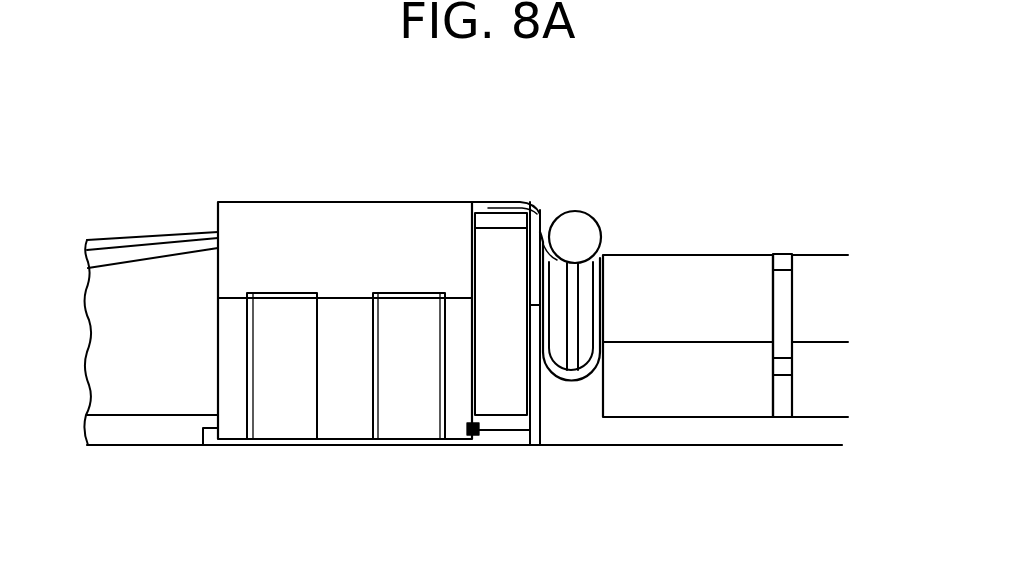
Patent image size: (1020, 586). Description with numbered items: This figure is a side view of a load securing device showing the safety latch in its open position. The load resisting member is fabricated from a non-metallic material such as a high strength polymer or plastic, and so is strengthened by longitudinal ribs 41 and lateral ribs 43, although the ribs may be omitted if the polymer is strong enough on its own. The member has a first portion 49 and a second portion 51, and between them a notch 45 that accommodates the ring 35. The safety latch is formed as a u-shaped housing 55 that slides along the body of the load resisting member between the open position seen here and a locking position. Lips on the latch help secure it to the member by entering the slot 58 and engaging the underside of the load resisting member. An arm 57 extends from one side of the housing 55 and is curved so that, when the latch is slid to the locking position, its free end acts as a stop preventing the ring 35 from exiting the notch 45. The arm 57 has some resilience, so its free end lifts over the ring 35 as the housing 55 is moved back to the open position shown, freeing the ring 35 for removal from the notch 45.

The ring 35 is at (587, 232).
The longitudinal ribs 41 is at (727, 273).
The lateral ribs 43 is at (793, 297).
The notch 45 is at (553, 200).
The first portion 49 is at (703, 222).
The second portion 51 is at (137, 227).
The u-shaped housing 55 is at (343, 218).
The arm 57 is at (516, 197).
The slot 58 is at (512, 438).